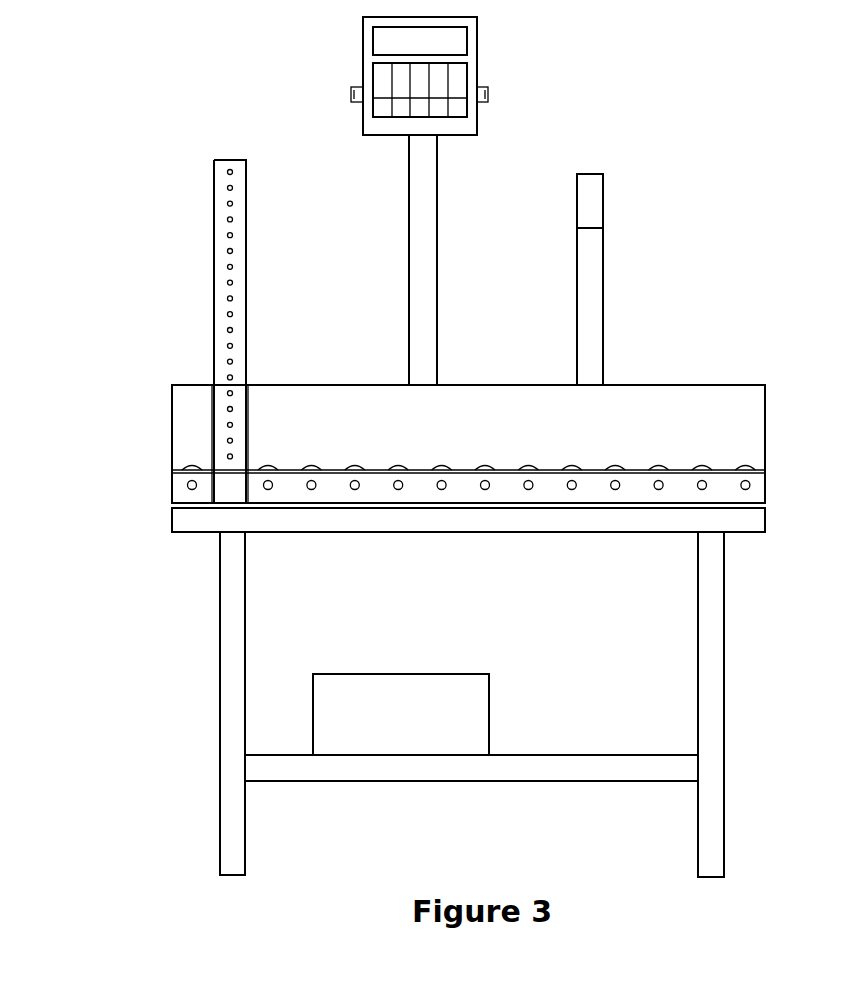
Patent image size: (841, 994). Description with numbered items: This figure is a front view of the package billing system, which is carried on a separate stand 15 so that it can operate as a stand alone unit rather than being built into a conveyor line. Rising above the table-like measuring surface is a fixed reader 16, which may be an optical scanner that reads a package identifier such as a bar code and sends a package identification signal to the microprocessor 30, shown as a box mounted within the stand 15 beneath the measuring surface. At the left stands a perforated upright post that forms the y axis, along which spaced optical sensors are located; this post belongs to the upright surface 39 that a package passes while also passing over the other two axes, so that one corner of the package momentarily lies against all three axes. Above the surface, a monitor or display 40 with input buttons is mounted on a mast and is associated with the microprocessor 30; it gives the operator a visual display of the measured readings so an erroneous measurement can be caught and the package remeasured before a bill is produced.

The monitor or display 40 is at (477, 43).
The y axis y is at (214, 216).
The reader 16 is at (598, 187).
The upright surface 39 is at (748, 413).
The stand 15 is at (710, 649).
The microprocessor 30 is at (415, 686).